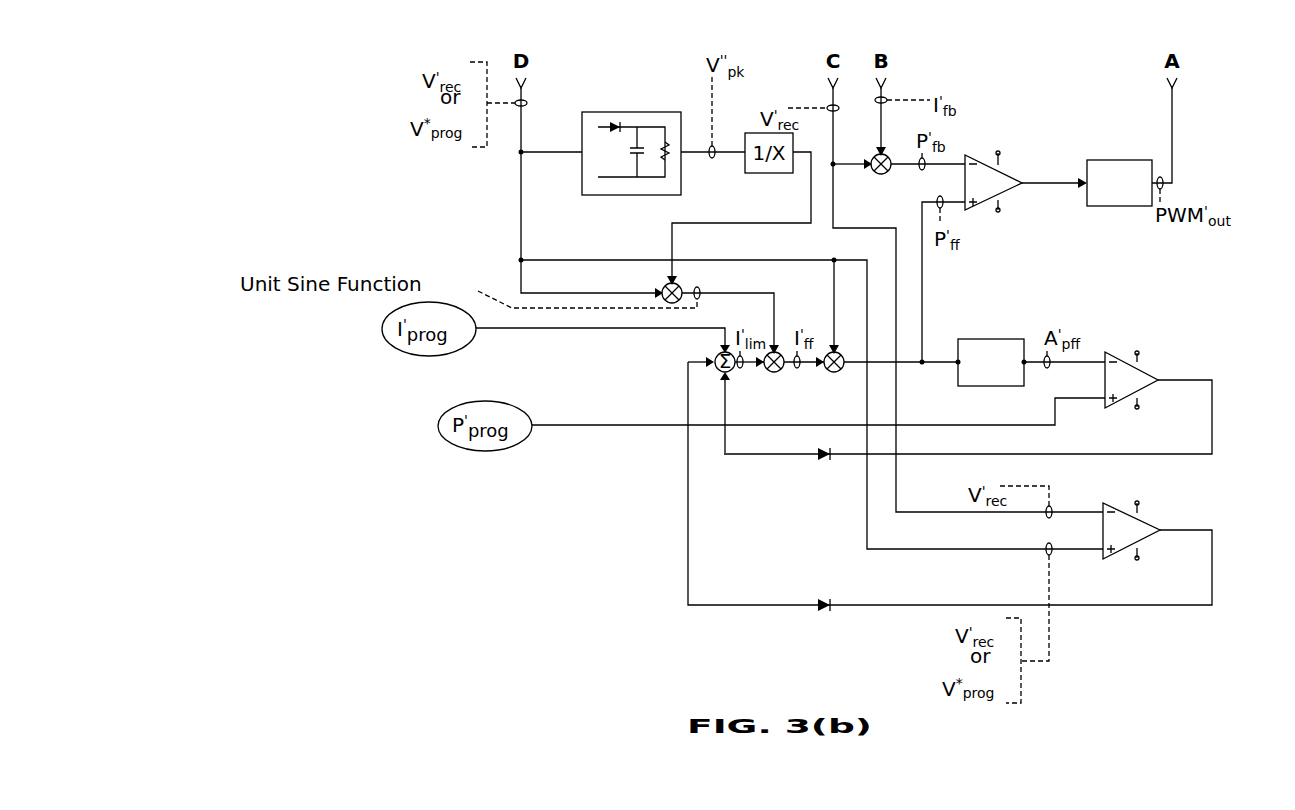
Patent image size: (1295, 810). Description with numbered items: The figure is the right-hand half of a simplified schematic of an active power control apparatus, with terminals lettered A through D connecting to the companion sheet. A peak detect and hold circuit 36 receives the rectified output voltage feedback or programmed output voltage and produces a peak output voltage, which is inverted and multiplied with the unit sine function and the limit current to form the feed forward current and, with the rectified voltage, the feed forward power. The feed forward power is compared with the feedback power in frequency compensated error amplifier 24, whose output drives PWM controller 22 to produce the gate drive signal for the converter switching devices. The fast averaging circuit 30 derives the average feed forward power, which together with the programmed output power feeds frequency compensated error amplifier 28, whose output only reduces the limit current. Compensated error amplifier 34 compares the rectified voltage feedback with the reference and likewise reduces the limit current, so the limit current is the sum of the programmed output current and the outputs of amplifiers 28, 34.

The peak detect and hold circuit 36 is at (636, 111).
The frequency compensated error amplifier 24 is at (993, 182).
The PWM controller 22 is at (1094, 165).
The fast averaging circuit 30 is at (986, 339).
The frequency compensated error amplifier 28 is at (1122, 386).
The compensated error amplifier 34 is at (1124, 537).